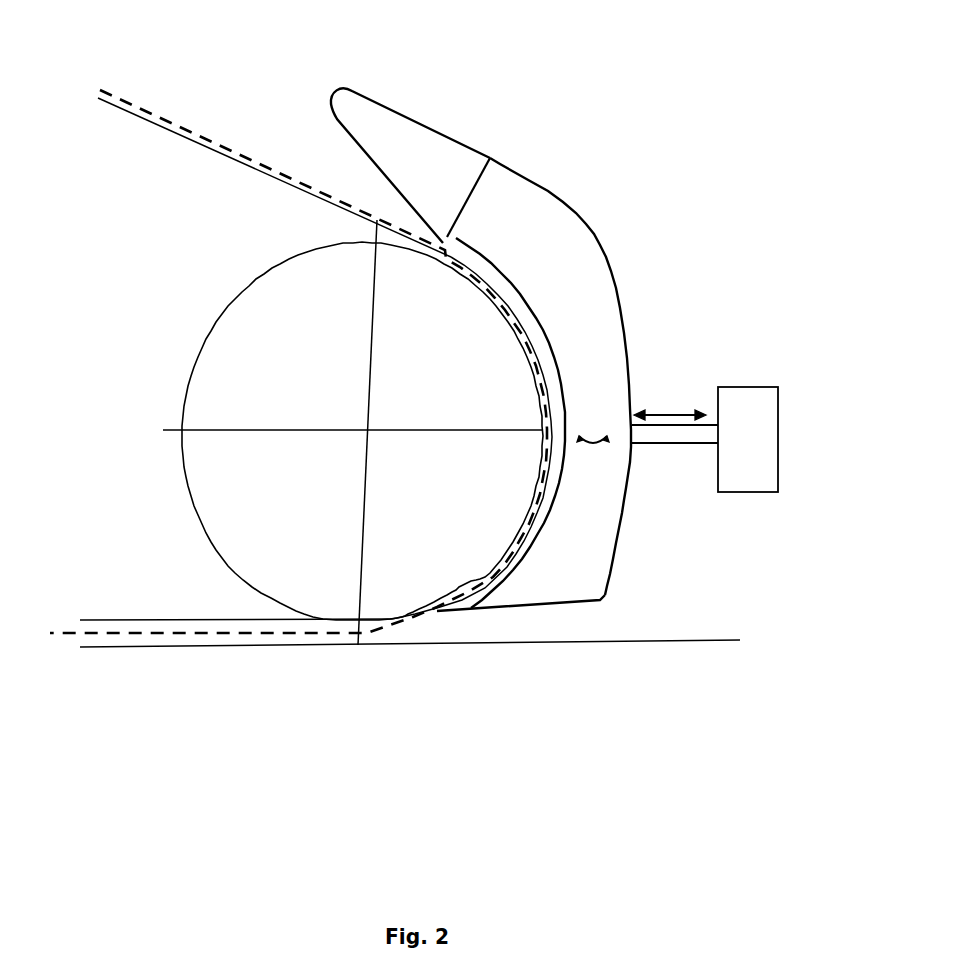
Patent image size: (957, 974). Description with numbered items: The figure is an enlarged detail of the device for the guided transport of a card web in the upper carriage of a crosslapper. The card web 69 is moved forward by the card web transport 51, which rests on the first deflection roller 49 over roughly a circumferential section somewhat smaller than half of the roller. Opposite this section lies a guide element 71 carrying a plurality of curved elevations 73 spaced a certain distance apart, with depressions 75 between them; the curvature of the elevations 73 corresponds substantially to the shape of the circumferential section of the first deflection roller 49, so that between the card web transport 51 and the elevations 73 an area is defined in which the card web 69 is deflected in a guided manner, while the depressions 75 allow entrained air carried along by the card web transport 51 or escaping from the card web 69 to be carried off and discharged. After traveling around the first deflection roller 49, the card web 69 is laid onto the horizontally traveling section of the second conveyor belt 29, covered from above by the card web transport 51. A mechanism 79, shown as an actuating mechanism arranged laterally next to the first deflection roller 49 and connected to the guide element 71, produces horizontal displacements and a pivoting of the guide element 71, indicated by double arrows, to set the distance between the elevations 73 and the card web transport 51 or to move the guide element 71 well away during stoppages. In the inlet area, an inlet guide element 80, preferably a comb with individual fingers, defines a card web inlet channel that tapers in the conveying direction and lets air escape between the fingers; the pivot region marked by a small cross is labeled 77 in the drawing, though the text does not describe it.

The second conveyor belt 29 is at (240, 648).
The first deflection roller 49 is at (313, 377).
The card web transport 51 is at (157, 123).
The card web 69 is at (202, 138).
The guide element 71 is at (575, 214).
The curved elevations 73 is at (462, 598).
The depressions 75 is at (533, 545).
The pivot axis 77 is at (602, 400).
The mechanism 79 is at (778, 403).
The inlet guide element 80 is at (409, 147).